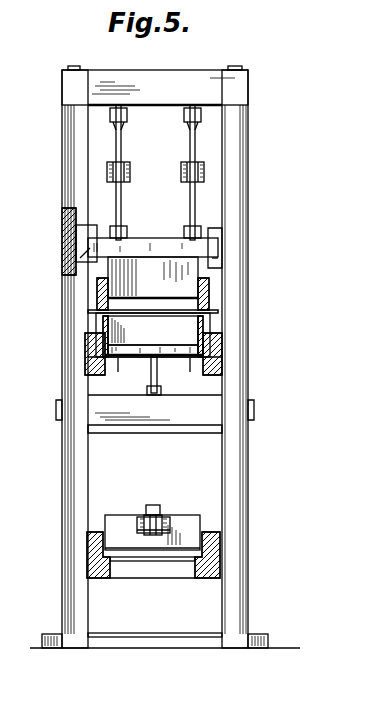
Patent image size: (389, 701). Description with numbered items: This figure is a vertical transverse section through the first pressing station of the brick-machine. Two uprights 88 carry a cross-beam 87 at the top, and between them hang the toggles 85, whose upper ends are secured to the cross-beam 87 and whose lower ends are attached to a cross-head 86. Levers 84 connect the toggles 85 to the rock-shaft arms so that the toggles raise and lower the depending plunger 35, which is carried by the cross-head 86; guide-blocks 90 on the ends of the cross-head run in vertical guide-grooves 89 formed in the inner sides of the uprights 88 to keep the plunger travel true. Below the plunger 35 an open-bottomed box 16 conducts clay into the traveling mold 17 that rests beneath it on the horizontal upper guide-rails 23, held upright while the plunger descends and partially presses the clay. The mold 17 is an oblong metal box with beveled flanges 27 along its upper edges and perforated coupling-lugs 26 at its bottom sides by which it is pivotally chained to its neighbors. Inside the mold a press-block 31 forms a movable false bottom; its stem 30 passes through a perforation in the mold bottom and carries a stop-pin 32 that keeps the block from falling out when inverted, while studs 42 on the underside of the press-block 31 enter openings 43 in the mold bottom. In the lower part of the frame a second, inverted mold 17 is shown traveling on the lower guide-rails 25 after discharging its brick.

The box 16 is at (210, 293).
The traveling mold 17 is at (185, 520).
The upper guide-rails 23 is at (86, 350).
The lower guide-rails 25 is at (88, 564).
The coupling-lugs 26 is at (140, 535).
The flanges 27 is at (128, 565).
The stem 30 is at (158, 398).
The press-block 31 is at (166, 348).
The stop-pin 32 is at (150, 394).
The plunger 35 is at (153, 277).
The studs 42 is at (123, 362).
The openings 43 is at (86, 366).
The levers 84 is at (181, 173).
The toggles 85 is at (190, 143).
The cross-head 86 is at (162, 240).
The cross-beam 87 is at (155, 85).
The uprights 88 is at (63, 173).
The guide-grooves 89 is at (76, 207).
The guide-blocks 90 is at (78, 265).